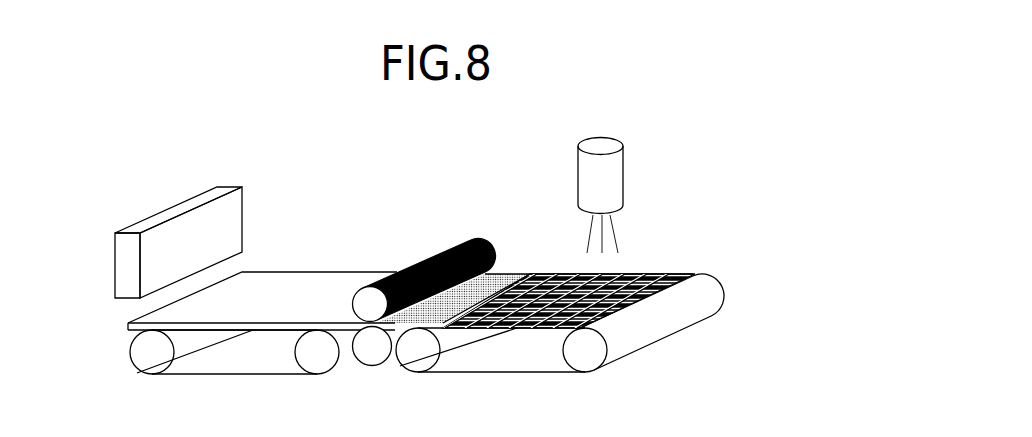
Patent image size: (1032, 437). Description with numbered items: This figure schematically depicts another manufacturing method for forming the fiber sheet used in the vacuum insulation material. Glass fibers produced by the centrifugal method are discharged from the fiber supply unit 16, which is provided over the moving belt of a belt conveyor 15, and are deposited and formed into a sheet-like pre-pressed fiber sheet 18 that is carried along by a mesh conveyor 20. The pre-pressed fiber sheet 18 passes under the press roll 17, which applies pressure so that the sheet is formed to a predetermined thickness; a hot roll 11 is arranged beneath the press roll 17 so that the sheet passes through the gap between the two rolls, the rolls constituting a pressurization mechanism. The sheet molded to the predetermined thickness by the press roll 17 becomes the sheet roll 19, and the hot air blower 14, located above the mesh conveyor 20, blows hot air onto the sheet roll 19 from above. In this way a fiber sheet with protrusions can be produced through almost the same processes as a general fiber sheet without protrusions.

The hot roll 11 is at (373, 352).
The hot air blower 14 is at (612, 197).
The belt conveyor 15 is at (180, 332).
The fiber supply unit 16 is at (133, 265).
The press roll 17 is at (415, 262).
The pre-pressed fiber sheet 18 is at (328, 287).
The sheet roll 19 is at (498, 272).
The mesh conveyor 20 is at (648, 273).